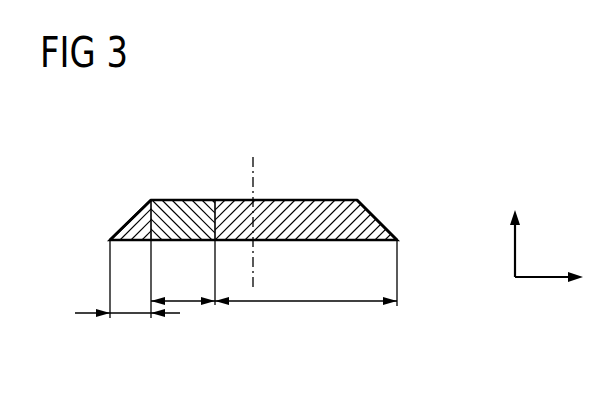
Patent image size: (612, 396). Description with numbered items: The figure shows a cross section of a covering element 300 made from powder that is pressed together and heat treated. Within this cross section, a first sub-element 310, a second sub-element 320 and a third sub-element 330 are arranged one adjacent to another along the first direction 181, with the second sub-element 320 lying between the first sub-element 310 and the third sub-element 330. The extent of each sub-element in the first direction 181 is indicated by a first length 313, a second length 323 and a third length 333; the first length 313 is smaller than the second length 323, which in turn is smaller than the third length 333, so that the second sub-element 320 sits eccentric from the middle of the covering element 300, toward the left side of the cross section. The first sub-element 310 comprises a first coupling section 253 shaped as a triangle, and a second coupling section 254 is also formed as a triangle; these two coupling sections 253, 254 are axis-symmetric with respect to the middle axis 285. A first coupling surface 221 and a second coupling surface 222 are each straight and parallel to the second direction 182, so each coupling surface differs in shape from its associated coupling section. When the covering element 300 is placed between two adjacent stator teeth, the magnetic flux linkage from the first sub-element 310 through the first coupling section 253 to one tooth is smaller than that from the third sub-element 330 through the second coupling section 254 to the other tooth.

The covering element 300 is at (402, 126).
The first sub-element 310 is at (112, 236).
The second sub-element 320 is at (172, 207).
The third sub-element 330 is at (315, 210).
The first coupling section 253 is at (128, 220).
The second coupling section 254 is at (380, 224).
The first coupling surface 221 is at (143, 212).
The second coupling surface 222 is at (218, 215).
The middle axis 285 is at (254, 157).
The first length 313 is at (130, 314).
The second length 323 is at (185, 302).
The third length 333 is at (305, 302).
The first direction 181 is at (537, 278).
The second direction 182 is at (515, 255).